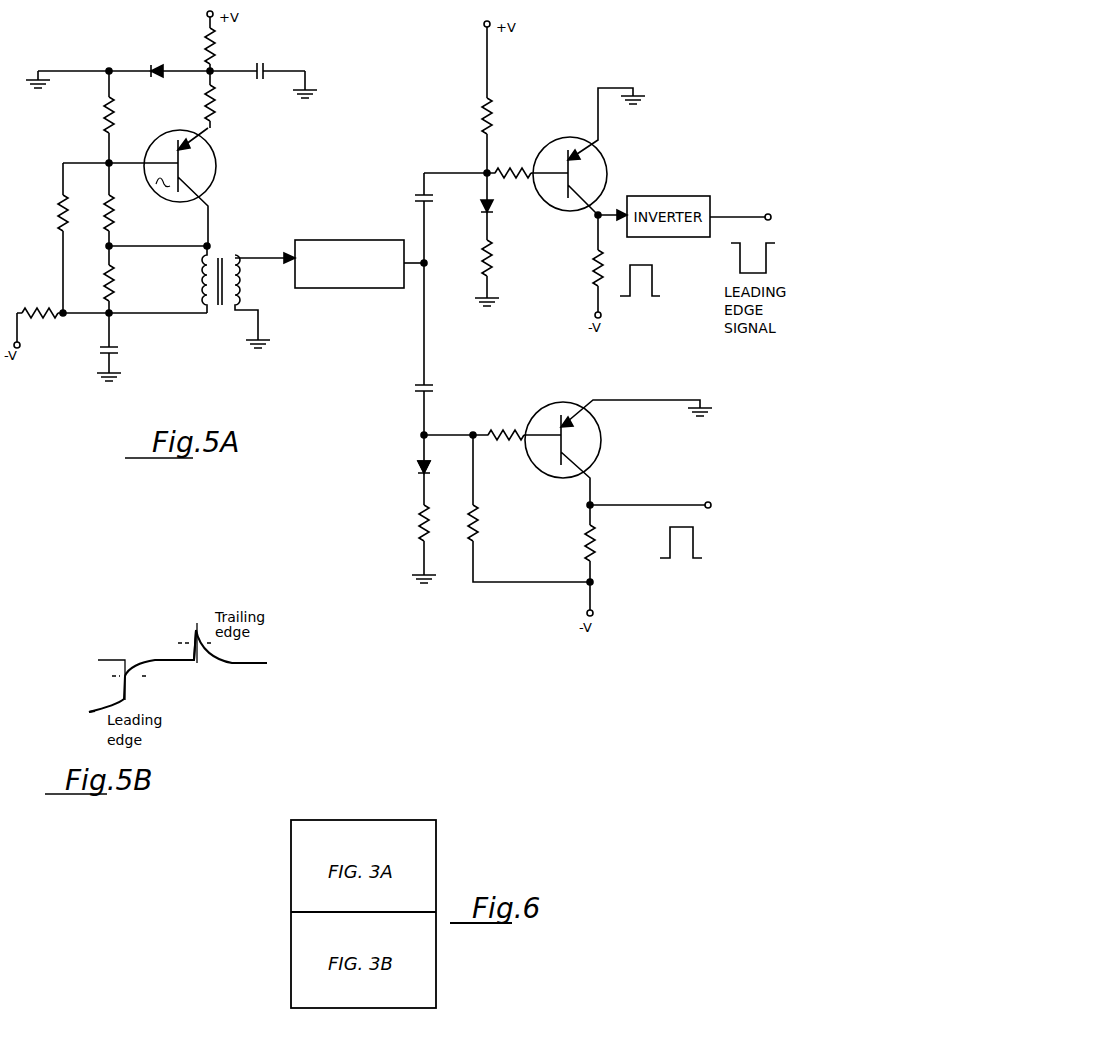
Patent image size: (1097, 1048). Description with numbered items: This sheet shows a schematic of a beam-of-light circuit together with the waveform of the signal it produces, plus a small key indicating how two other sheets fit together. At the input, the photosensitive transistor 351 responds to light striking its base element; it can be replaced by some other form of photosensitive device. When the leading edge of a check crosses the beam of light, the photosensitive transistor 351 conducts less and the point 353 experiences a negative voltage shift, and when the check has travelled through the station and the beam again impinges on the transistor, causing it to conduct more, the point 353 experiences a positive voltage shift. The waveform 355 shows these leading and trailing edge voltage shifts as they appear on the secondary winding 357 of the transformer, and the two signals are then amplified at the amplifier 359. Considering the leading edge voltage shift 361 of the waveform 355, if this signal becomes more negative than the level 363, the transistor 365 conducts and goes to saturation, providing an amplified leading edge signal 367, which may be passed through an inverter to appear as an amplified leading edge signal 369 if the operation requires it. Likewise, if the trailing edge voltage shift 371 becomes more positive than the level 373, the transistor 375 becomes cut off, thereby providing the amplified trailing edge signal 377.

In FIG. 5A, the photosensitive transistor 351 is at (200, 175).
In FIG. 5A, the point 353 is at (205, 246).
In FIG. 5B, the waveform 355 is at (175, 666).
In FIG. 5A, the secondary winding 357 is at (237, 259).
In FIG. 5A, the amplifier 359 is at (366, 243).
In FIG. 5B, the leading edge voltage shift 361 is at (80, 709).
In FIG. 5B, the level 363 is at (113, 677).
In FIG. 5A, the transistor 365 is at (558, 191).
In FIG. 5A, the amplified leading edge signal 367 is at (646, 282).
In FIG. 5A, the amplified leading edge signal 369 is at (753, 261).
In FIG. 5B, the trailing edge voltage shift 371 is at (196, 625).
In FIG. 5B, the level 373 is at (186, 641).
In FIG. 5A, the transistor 375 is at (580, 444).
In FIG. 5A, the amplified trailing edge signal 377 is at (685, 546).